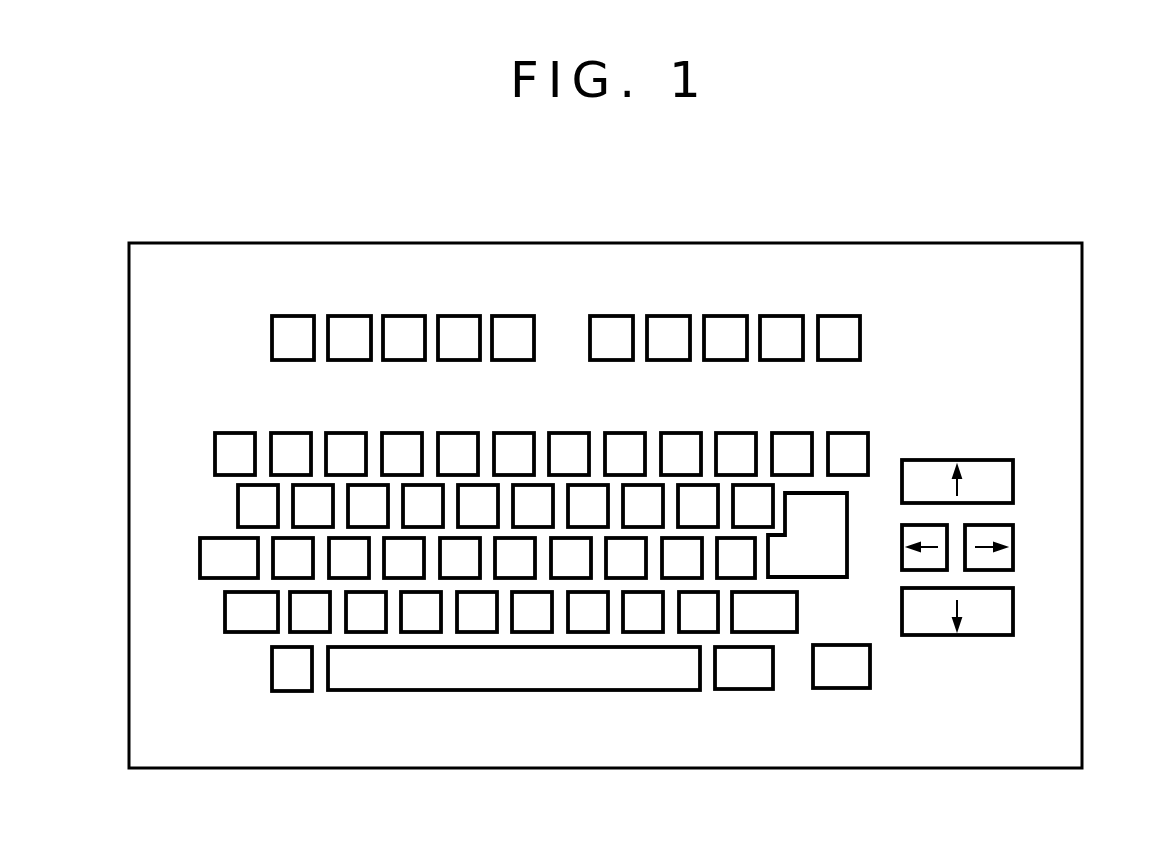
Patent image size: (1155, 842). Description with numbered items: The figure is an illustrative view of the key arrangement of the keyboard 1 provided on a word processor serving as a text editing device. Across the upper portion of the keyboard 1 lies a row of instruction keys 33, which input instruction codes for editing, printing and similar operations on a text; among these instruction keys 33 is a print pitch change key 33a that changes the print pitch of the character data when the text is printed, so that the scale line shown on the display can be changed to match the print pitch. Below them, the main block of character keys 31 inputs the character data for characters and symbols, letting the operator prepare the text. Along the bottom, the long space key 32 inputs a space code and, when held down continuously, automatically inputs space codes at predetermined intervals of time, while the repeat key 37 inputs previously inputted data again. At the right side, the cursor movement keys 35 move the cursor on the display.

The keyboard 1 is at (1031, 187).
The character keys 31 is at (190, 433).
The space key 32 is at (453, 673).
The instruction keys 33 is at (860, 297).
The print pitch change key 33a is at (291, 361).
The cursor movement keys 35 is at (1022, 458).
The repeat key 37 is at (858, 666).